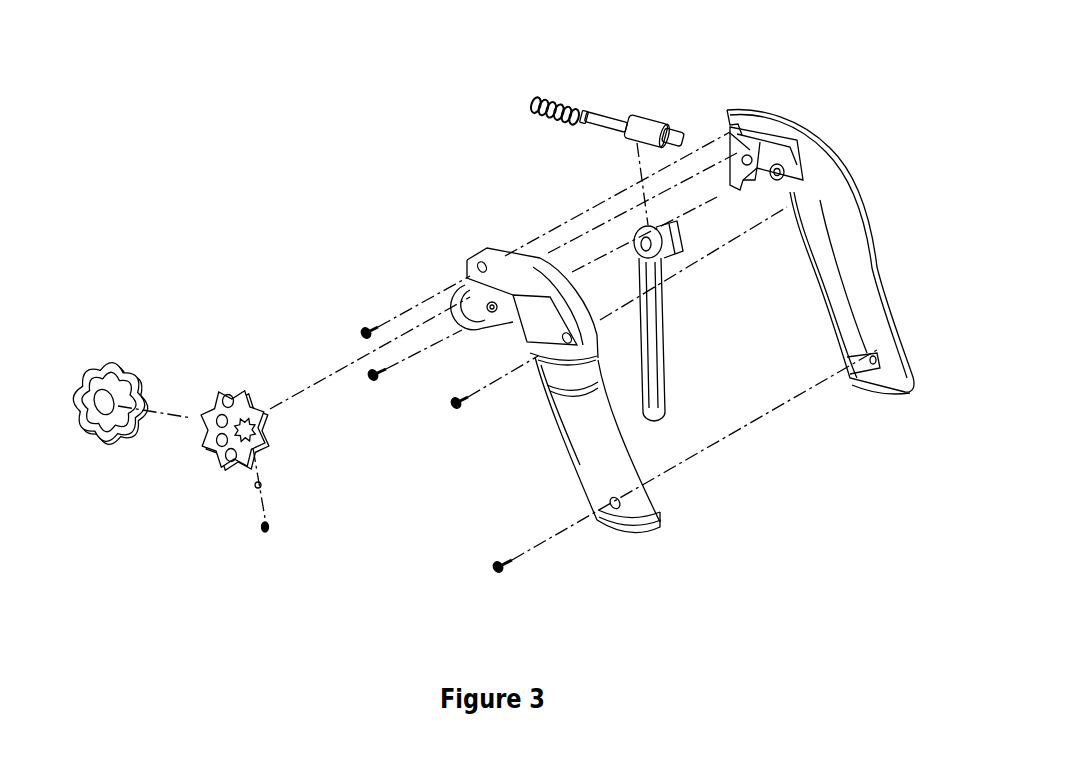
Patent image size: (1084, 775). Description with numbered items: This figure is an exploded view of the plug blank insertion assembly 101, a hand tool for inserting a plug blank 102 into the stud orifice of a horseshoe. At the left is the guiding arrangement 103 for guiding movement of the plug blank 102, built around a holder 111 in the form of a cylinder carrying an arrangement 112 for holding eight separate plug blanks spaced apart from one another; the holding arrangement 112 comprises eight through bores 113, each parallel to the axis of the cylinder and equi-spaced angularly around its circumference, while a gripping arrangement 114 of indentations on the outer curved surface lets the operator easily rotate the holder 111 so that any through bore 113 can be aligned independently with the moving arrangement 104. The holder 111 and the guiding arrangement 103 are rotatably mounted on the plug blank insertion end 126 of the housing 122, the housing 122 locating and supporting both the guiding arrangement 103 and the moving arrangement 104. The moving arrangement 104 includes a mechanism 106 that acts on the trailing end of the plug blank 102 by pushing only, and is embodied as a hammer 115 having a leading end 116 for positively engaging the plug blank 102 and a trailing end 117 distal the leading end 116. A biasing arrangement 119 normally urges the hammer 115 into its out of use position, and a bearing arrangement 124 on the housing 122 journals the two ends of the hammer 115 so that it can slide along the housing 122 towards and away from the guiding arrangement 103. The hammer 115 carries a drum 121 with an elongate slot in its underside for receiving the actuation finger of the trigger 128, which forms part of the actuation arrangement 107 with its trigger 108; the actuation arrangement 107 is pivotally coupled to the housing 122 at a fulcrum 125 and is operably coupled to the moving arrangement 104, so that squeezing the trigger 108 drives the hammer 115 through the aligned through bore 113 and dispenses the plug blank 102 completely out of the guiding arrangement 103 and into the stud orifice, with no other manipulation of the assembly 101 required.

The plug blank insertion assembly 101 is at (280, 130).
The plug blank 102 is at (260, 530).
The guiding arrangement 103 is at (315, 345).
The moving arrangement 104 is at (602, 110).
The engaging mechanism 106 is at (599, 108).
The actuation arrangement 107 is at (538, 270).
The trigger 108 is at (738, 300).
The holder 111 is at (233, 423).
The holding arrangement 112 is at (242, 418).
The through bores 113 is at (247, 453).
The gripping arrangement 114 is at (207, 438).
The hammer 115 is at (633, 122).
The leading end 116 is at (580, 116).
The trailing end 117 is at (680, 130).
The biasing arrangement 119 is at (533, 105).
The drum 121 is at (640, 136).
The housing 122 is at (860, 335).
The bearing arrangement 124 is at (803, 150).
The fulcrum 125 is at (782, 170).
The plug blank insertion end 126 is at (458, 298).
The trigger 128 is at (656, 338).